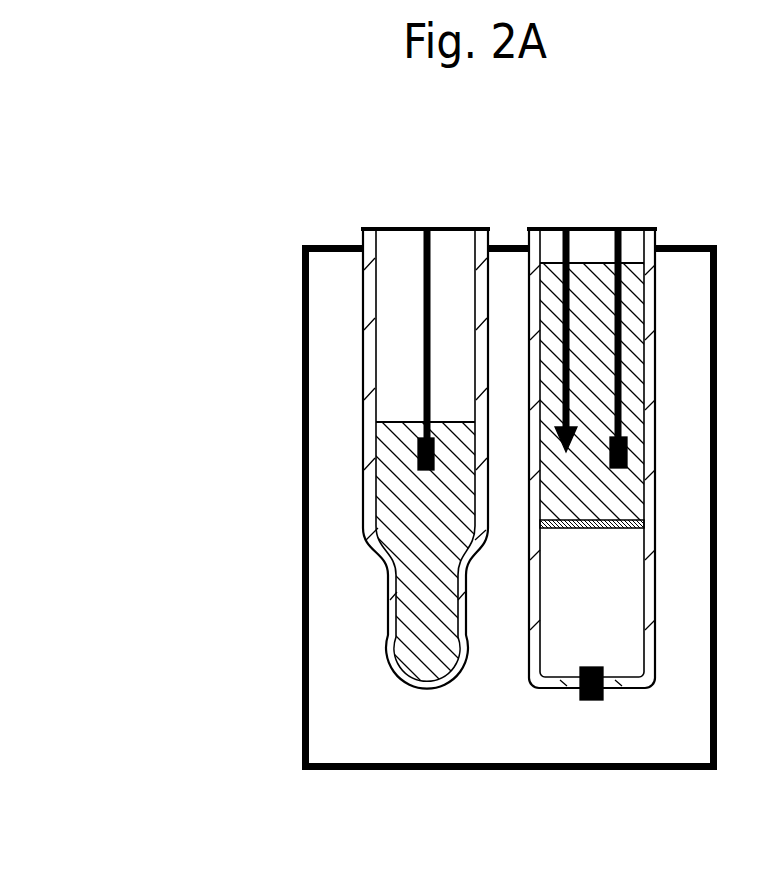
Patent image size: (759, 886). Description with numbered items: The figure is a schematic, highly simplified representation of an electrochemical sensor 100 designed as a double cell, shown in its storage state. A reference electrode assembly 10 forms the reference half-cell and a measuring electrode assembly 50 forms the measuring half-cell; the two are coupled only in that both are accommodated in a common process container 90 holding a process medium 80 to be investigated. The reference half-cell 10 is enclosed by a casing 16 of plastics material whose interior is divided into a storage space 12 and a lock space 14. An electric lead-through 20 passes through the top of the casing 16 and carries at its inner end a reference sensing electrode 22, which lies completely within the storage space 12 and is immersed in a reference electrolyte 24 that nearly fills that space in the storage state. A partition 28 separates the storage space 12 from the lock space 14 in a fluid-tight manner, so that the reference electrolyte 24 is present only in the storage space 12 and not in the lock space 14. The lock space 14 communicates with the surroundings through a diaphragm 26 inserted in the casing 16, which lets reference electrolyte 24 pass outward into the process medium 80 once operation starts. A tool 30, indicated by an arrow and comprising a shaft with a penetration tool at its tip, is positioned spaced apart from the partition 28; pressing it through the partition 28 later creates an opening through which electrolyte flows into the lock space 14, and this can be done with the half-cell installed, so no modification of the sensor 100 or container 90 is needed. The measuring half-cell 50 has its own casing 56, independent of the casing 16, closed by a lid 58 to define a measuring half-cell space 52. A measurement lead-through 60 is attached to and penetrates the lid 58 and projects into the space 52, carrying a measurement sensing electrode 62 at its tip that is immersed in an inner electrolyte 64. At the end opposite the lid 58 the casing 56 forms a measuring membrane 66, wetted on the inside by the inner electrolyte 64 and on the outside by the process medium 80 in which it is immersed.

The electrochemical sensor 100 is at (170, 200).
The reference electrode assembly 10 is at (620, 487).
The storage space 12 is at (585, 245).
The lock space 14 is at (627, 644).
The casing 16 is at (518, 246).
The electric lead-through 20 is at (655, 233).
The reference sensing electrode 22 is at (625, 450).
The reference electrolyte 24 is at (628, 335).
The diaphragm 26 is at (585, 702).
The partition 28 is at (623, 525).
The tool 30 is at (560, 280).
The measuring electrode assembly 50 is at (360, 474).
The measuring half-cell space 52 is at (453, 268).
The casing 56 is at (368, 385).
The lid 58 is at (458, 227).
The measurement lead-through 60 is at (425, 290).
The measurement sensing electrode 62 is at (416, 440).
The inner electrolyte 64 is at (392, 516).
The measuring membrane 66 is at (433, 690).
The process medium 80 is at (352, 735).
The process container 90 is at (302, 680).